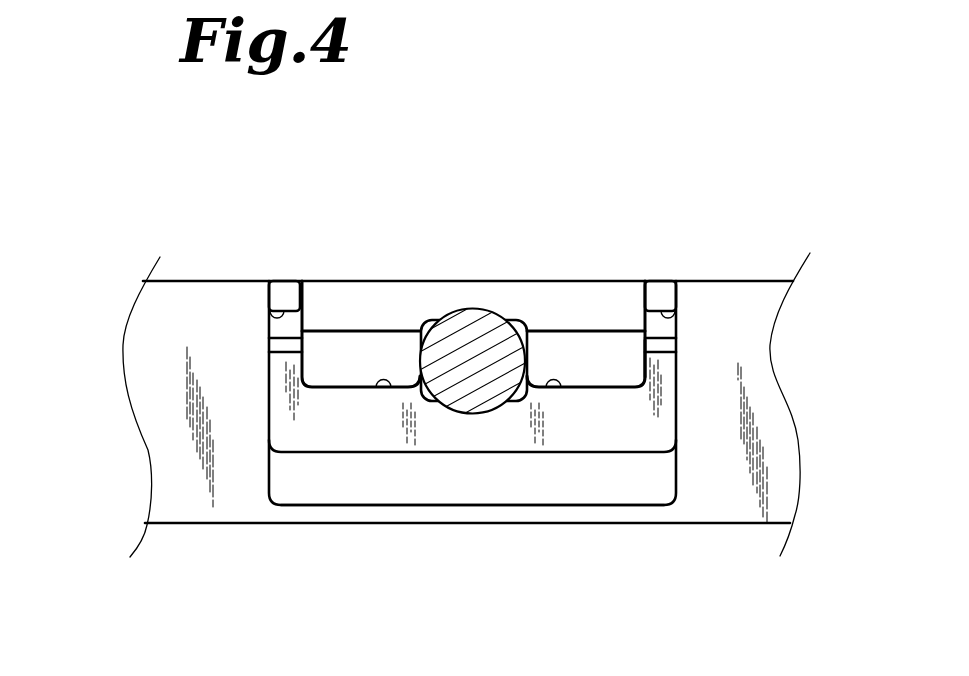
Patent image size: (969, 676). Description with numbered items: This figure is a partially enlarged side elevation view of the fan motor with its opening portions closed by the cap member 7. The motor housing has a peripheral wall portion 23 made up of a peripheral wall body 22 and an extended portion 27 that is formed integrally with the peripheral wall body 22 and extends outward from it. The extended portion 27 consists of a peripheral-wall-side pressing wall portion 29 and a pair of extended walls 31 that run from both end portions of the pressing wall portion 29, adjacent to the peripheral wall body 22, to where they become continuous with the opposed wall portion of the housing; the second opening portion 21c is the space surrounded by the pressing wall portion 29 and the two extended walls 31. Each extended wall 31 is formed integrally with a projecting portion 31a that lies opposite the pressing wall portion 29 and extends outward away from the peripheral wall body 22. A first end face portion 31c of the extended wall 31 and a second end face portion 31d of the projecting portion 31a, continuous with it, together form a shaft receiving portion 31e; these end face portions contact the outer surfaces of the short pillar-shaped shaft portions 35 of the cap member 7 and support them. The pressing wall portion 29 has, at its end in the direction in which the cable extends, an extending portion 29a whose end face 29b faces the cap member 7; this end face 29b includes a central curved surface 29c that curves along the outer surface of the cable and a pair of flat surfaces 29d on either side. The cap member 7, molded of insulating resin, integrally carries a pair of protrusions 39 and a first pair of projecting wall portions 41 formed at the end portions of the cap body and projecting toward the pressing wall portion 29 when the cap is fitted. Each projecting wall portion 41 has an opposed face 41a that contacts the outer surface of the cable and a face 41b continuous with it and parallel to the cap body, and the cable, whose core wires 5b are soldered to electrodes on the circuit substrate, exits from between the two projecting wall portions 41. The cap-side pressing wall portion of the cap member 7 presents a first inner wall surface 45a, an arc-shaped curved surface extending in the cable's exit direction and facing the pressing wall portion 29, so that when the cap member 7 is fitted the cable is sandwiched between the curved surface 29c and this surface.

The cap member 7 is at (578, 277).
The peripheral wall body 22 is at (187, 480).
The peripheral wall portion 23 is at (737, 297).
The extended portion 27 is at (508, 490).
The peripheral-wall-side pressing wall portion 29 is at (490, 433).
The extending portion 29a is at (337, 440).
The end face 29b is at (592, 370).
The curved surface 29c is at (453, 407).
The flat surfaces 29d is at (380, 392).
The extended walls 31 is at (271, 432).
The projecting portion 31a is at (290, 280).
The first end face portion 31c is at (283, 375).
The second end face portion 31d is at (268, 328).
The shaft receiving portions 31e is at (257, 352).
The shaft portions 35 is at (277, 330).
The protrusions 39 is at (542, 328).
The first pair of projecting wall portions 41 is at (333, 320).
The opposed face 41a is at (430, 318).
The face 41b is at (398, 345).
The first inner wall surface 45a is at (457, 310).
The core wires 5b is at (485, 392).
The second opening portion 21c is at (644, 362).